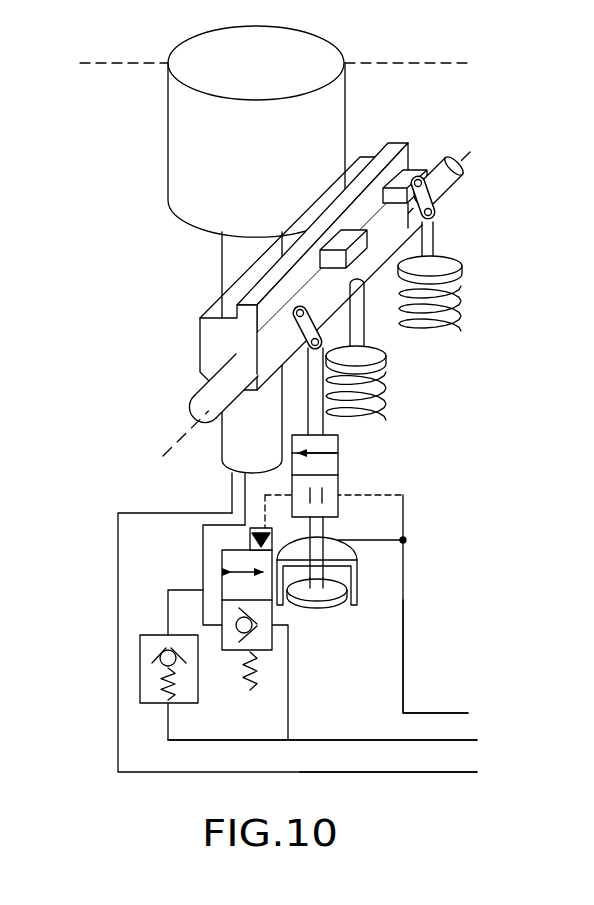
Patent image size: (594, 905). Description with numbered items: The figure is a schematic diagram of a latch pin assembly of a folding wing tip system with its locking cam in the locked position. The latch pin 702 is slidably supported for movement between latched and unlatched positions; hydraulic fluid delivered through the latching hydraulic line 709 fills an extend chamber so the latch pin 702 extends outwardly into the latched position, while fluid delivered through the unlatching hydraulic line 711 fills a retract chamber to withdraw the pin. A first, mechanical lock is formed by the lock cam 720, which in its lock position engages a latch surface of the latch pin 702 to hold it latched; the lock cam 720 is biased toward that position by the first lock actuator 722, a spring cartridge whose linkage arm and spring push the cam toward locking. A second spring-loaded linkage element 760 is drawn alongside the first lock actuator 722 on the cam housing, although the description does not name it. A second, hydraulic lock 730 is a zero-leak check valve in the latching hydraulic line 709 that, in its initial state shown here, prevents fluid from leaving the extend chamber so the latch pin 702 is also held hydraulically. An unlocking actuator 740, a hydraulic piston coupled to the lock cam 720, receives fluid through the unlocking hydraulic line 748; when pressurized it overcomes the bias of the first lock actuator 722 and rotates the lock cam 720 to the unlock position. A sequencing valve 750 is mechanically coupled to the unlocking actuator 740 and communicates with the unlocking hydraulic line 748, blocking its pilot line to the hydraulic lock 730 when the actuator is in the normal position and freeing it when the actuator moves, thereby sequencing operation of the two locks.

The latch pin 702 is at (160, 146).
The lock cam 720 is at (215, 344).
The first lock actuator 722 is at (455, 246).
The valve with cam follower link 760 is at (396, 370).
The sequencing valve 750 is at (342, 476).
The unlocking actuator 740 is at (323, 612).
The hydraulic lock 730 is at (227, 658).
The unlocking hydraulic line 748 is at (445, 713).
The latching hydraulic line 709 is at (458, 740).
The unlatching hydraulic line 711 is at (437, 772).